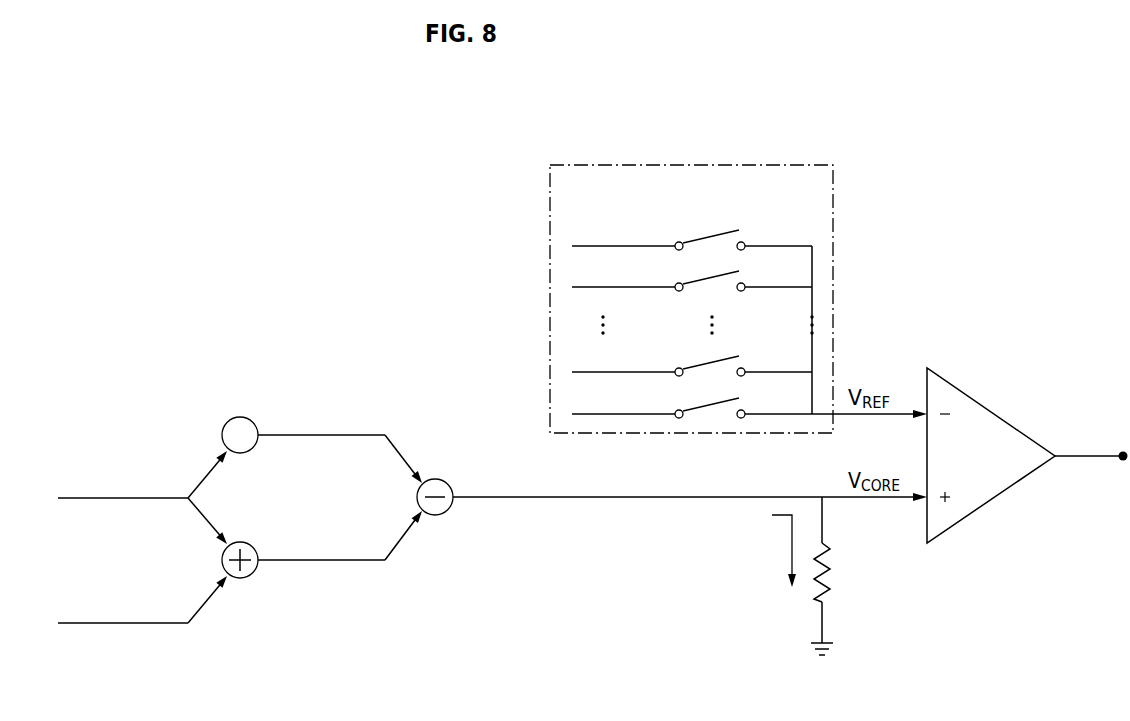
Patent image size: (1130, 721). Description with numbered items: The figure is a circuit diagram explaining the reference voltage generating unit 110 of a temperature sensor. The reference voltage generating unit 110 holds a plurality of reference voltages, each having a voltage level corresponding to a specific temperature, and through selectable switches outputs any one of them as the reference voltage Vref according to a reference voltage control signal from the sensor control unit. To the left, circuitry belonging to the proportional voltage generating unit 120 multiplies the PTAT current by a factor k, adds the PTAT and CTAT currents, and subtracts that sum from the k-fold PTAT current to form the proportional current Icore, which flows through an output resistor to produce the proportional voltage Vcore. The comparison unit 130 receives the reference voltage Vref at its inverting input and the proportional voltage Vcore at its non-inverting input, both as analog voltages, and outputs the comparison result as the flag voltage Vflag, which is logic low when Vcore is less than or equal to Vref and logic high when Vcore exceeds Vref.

The reference voltage generating unit 110 is at (550, 300).
The proportional voltage generating unit 120 is at (486, 530).
The comparison unit 130 is at (991, 411).